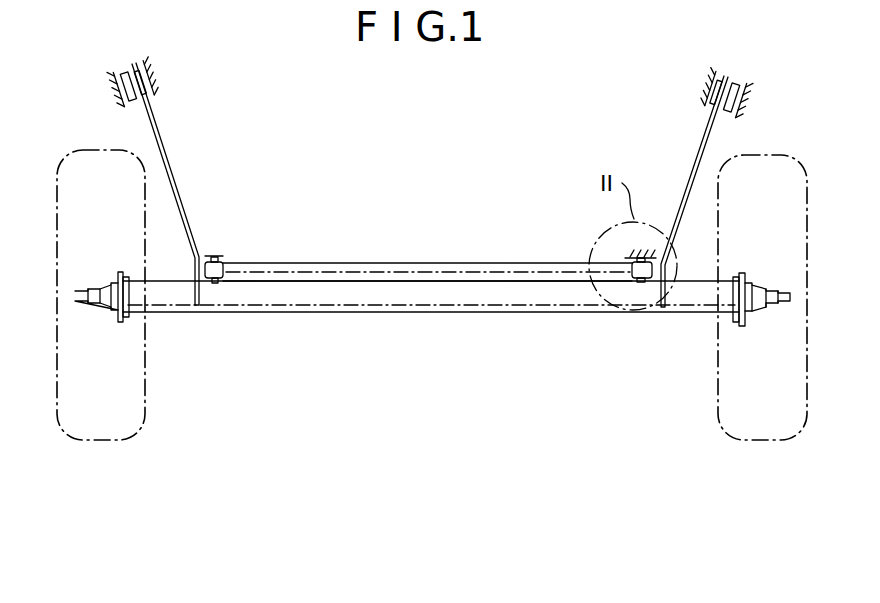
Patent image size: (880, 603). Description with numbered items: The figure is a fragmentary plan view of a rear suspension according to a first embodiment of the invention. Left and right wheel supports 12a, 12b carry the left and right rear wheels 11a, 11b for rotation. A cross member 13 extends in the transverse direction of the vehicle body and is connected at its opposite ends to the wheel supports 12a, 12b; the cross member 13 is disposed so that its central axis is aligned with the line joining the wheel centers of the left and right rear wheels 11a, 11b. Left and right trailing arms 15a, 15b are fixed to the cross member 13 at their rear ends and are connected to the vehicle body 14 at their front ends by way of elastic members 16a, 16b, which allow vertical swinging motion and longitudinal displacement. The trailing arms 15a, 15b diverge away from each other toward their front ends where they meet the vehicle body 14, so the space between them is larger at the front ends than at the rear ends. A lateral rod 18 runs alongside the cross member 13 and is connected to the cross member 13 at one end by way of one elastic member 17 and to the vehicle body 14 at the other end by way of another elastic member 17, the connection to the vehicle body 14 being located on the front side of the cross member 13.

The left rear wheel 11a is at (106, 148).
The right rear wheel 11b is at (788, 157).
The left wheel support 12a is at (112, 292).
The right wheel support 12b is at (754, 293).
The cross member 13 is at (507, 307).
The vehicle body 14 is at (153, 72).
The left trailing arm 15a is at (173, 176).
The right trailing arm 15b is at (694, 177).
The elastic member 16a is at (154, 92).
The elastic member 16b is at (710, 103).
The elastic member 17 is at (222, 261).
The lateral rod 18 is at (382, 267).